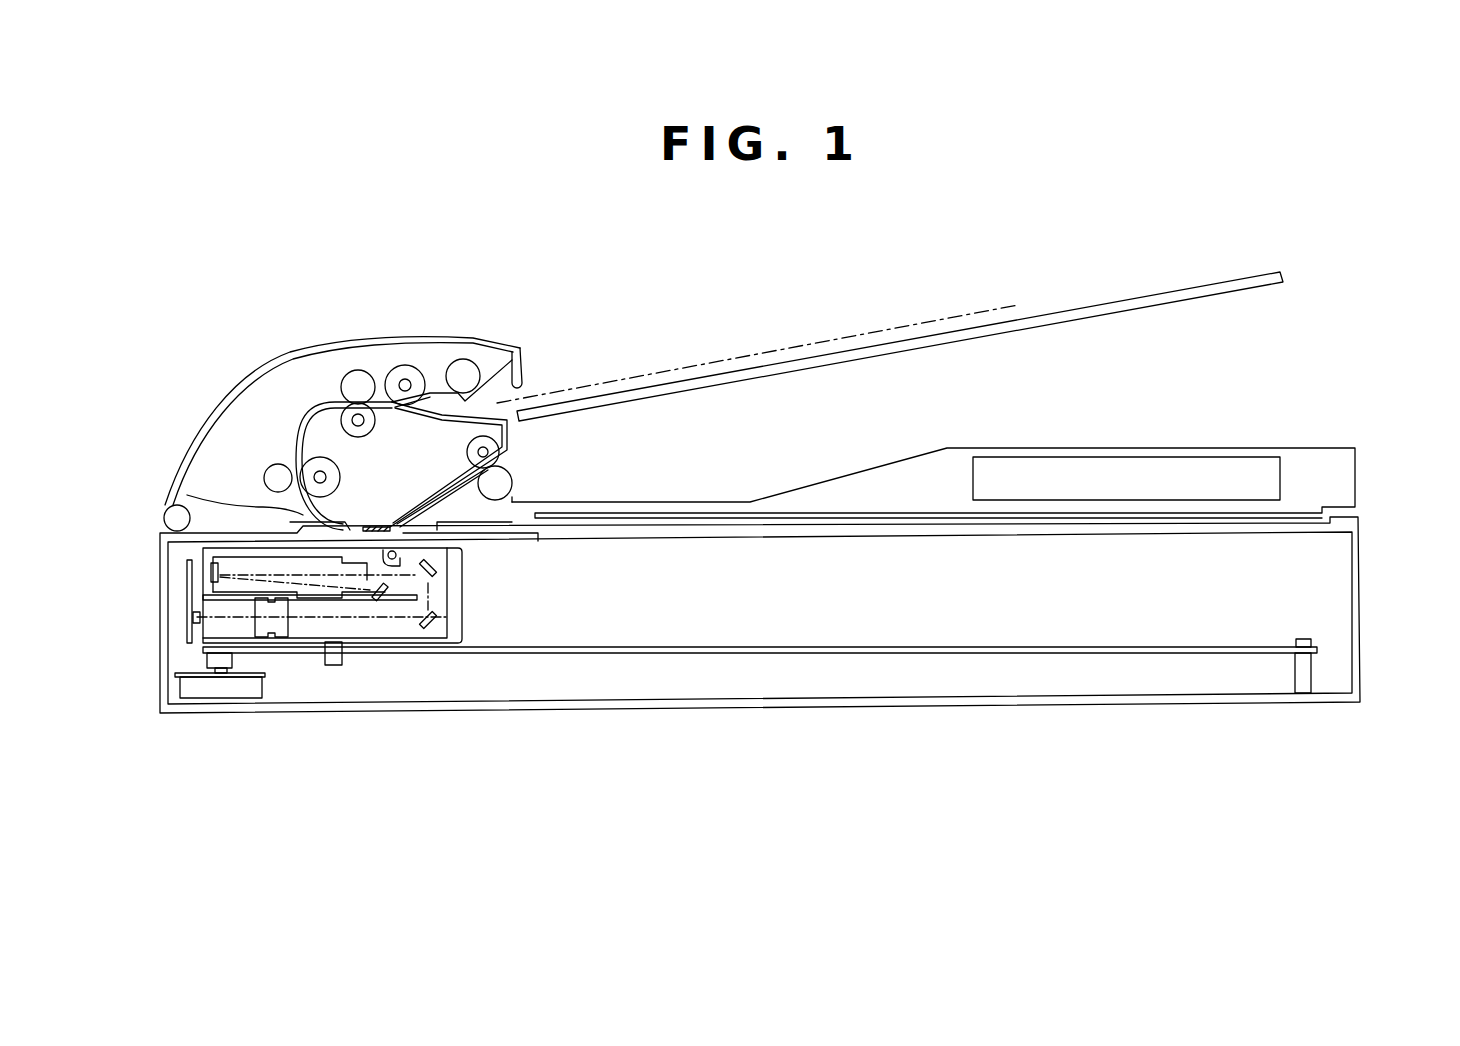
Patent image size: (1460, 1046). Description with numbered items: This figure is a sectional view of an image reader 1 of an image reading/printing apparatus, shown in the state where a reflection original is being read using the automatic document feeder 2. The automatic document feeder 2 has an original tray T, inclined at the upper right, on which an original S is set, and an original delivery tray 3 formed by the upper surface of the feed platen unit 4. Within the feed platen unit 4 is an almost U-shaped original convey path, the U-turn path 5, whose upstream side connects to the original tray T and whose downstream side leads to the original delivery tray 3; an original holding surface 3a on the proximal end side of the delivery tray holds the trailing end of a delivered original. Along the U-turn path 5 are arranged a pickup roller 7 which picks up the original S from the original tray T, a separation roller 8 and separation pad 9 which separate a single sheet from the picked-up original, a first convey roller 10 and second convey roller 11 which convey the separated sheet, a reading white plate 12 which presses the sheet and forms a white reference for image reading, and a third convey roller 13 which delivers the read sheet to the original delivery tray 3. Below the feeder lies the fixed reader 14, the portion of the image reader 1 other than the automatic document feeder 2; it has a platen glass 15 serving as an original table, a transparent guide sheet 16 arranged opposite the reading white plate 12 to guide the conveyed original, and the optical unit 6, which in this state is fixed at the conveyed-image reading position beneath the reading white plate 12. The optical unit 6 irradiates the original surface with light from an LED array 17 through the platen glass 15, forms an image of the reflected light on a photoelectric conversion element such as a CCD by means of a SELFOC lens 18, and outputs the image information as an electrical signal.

The image reader 1 is at (821, 801).
The automatic document feeder 2 is at (228, 400).
The original delivery tray 3 is at (1163, 448).
The original holding surface 3a is at (512, 498).
The feed platen unit 4 is at (971, 446).
The U-turn path 5 is at (313, 392).
The optical unit 6 is at (346, 656).
The pickup roller 7 is at (463, 372).
The separation roller 8 is at (405, 383).
The separation pad 9 is at (430, 393).
The first convey roller 10 is at (372, 428).
The second convey roller 11 is at (332, 480).
The reading white plate 12 is at (370, 532).
The third convey roller 13 is at (490, 455).
The fixed reader 14 is at (149, 530).
The platen glass 15 is at (1275, 533).
The transparent guide sheet 16 is at (174, 505).
The LED array 17 is at (391, 560).
The SELFOC lens 18 is at (198, 624).
The original S is at (960, 318).
The original tray T is at (1154, 300).